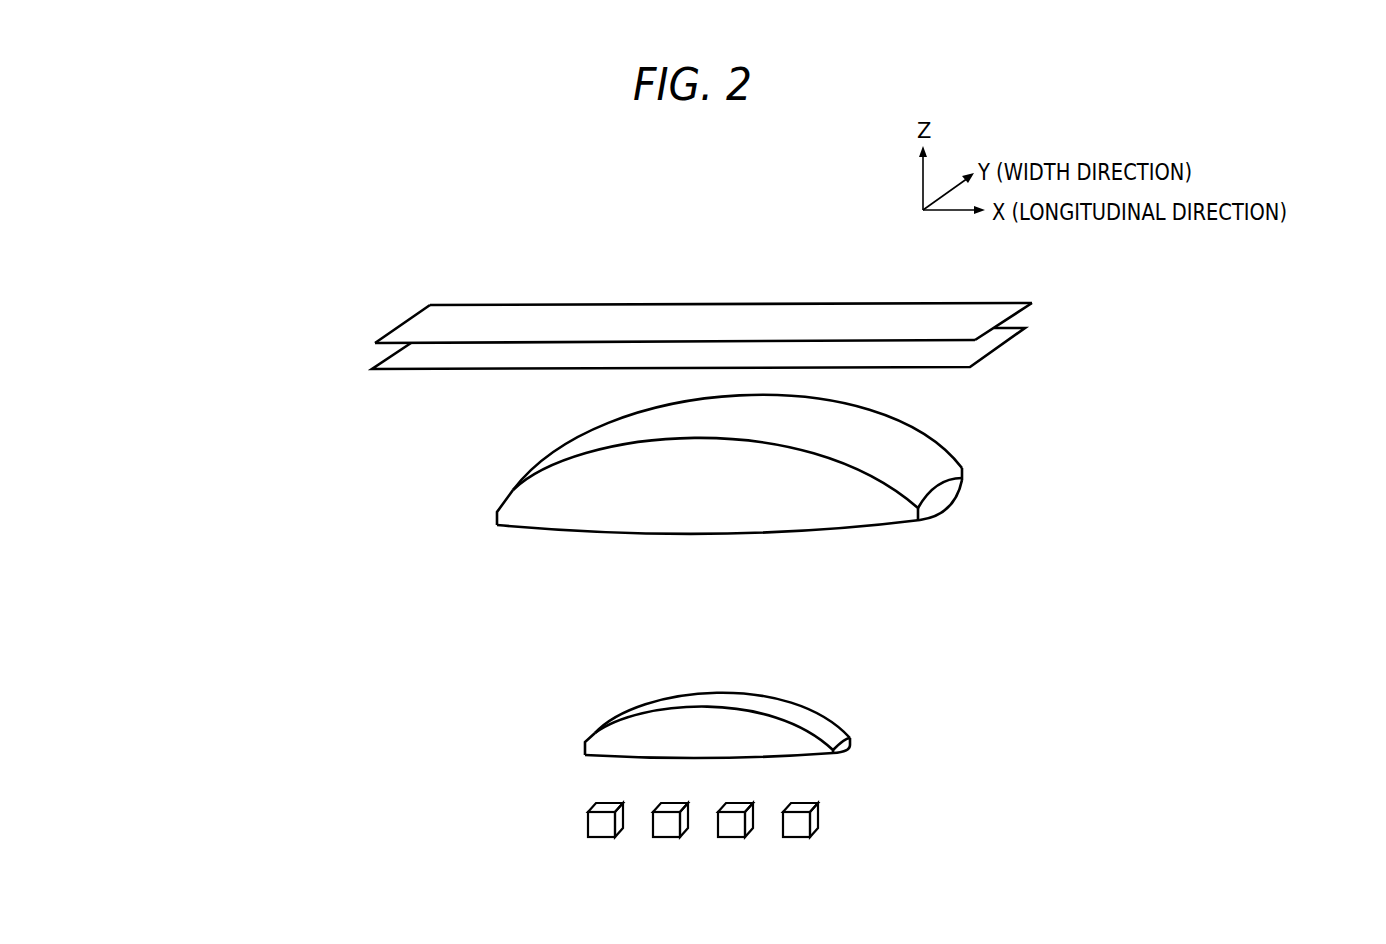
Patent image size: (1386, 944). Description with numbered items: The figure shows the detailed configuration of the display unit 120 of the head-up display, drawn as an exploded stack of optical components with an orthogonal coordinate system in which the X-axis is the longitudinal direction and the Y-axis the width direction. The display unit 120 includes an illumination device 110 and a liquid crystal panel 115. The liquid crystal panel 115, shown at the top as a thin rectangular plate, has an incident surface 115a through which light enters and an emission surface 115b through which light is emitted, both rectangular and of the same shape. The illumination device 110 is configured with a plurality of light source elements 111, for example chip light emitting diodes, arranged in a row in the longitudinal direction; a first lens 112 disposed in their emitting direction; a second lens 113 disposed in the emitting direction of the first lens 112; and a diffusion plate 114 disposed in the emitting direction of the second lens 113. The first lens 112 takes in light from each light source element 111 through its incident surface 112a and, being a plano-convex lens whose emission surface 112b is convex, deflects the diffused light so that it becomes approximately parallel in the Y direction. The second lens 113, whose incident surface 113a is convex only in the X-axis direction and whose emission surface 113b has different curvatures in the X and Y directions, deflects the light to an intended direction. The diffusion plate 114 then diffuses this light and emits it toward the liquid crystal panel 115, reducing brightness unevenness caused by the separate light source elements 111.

The display unit 120 is at (638, 248).
The illumination device 110 is at (303, 363).
The light source elements 111 is at (587, 823).
The first lens 112 is at (583, 748).
The incident surface 112a is at (820, 755).
The emission surface 112b is at (833, 728).
The second lens 113 is at (497, 513).
The incident surface 113a is at (888, 527).
The emission surface 113b is at (893, 447).
The diffusion plate 114 is at (403, 357).
The liquid crystal panel 115 is at (432, 334).
The incident surface 115a is at (940, 341).
The emission surface 115b is at (965, 317).